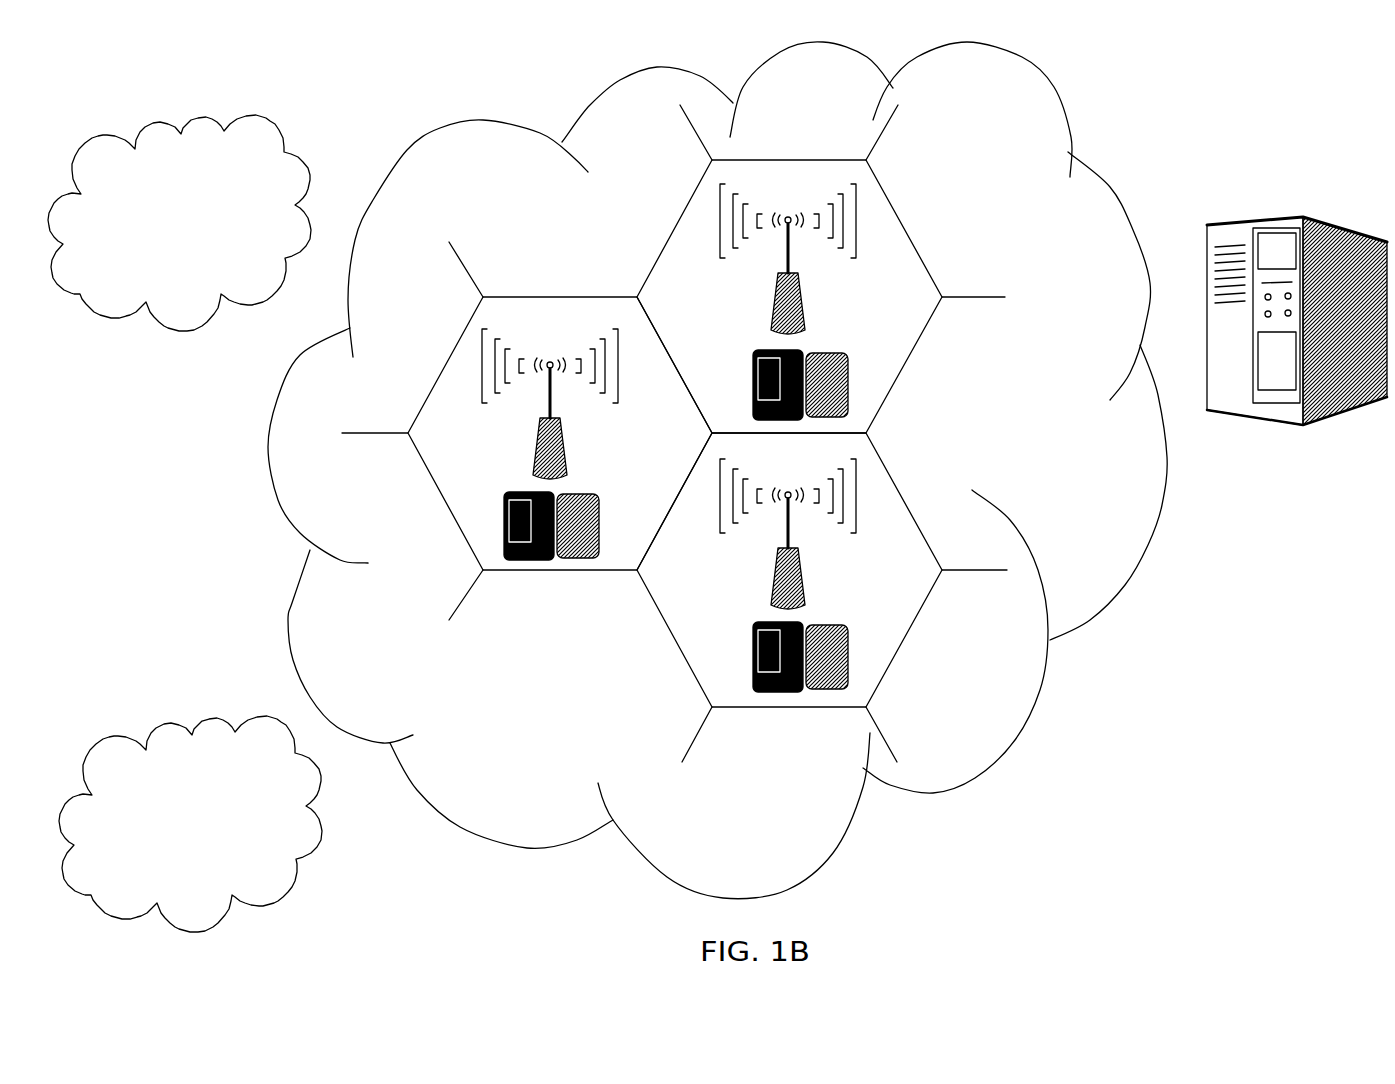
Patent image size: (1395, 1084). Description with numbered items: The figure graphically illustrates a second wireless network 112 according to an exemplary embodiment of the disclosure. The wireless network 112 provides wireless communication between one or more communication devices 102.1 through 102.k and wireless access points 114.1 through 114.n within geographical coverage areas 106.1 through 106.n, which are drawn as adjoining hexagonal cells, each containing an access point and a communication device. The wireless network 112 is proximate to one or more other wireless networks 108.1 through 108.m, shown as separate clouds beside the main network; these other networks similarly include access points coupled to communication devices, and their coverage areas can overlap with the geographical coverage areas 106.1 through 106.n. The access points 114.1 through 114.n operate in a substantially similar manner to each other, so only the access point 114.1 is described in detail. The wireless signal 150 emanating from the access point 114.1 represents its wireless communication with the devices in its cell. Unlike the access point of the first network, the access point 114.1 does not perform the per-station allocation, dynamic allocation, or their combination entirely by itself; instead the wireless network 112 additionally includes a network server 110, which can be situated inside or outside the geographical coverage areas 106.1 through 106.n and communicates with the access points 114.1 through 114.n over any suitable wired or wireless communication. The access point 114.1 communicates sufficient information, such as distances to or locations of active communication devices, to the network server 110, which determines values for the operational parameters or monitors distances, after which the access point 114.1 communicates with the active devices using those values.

The communication device 102.1 is at (862, 384).
The communication device 102.k is at (862, 654).
The geographical coverage area 106.1 is at (671, 235).
The geographical coverage area 106.n is at (800, 707).
The other wireless network 108.1 is at (277, 130).
The other wireless network 108.m is at (175, 725).
The network server 110 is at (1295, 217).
The wireless network 112 is at (1093, 163).
The wireless access point 114.1 is at (812, 276).
The wireless access point 114.n is at (814, 551).
The wireless signal 150 is at (868, 226).